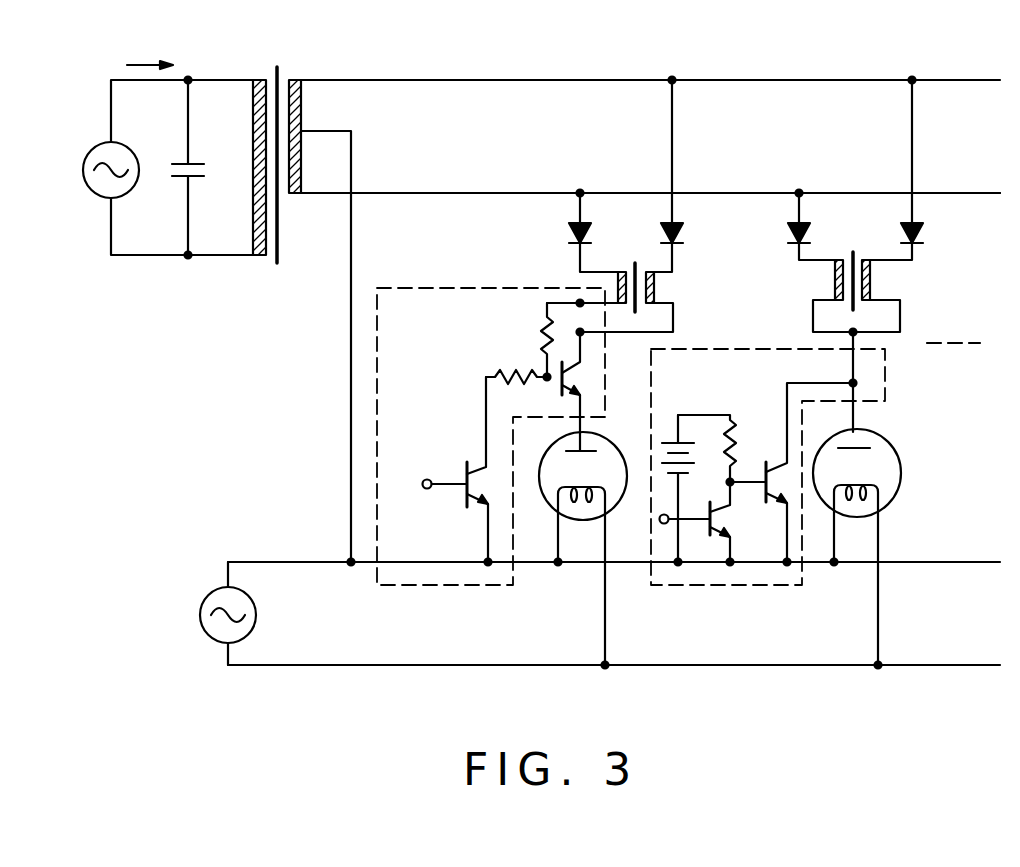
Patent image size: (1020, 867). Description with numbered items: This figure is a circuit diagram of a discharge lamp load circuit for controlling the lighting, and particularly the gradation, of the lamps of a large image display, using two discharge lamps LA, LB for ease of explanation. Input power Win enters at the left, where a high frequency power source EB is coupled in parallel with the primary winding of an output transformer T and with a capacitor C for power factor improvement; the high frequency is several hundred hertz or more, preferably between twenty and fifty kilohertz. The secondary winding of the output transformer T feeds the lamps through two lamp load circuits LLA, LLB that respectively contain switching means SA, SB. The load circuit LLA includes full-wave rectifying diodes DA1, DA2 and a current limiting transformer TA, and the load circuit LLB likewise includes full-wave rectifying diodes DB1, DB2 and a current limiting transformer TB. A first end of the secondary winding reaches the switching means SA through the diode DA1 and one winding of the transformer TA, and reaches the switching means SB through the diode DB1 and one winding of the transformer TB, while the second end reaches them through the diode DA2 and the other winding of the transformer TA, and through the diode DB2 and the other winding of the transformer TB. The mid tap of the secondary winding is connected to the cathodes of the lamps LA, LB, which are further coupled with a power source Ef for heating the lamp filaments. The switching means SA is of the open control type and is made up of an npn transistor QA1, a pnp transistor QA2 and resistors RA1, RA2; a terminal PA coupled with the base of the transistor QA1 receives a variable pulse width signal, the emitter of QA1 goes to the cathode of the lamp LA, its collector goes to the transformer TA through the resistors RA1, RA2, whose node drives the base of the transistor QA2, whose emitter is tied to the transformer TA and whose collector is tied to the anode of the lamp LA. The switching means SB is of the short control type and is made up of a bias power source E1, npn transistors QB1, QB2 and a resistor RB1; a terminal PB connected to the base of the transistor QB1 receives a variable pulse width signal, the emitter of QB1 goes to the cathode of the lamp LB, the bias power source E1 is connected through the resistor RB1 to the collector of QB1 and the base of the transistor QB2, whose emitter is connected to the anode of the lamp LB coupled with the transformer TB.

The input power Win is at (147, 50).
The high frequency power source EB is at (162, 167).
The capacitor C is at (194, 162).
The output transformer T is at (280, 70).
The lamp load circuit LLA is at (442, 236).
The lamp load circuit LLB is at (941, 328).
The switching means SA is at (405, 288).
The switching means SB is at (887, 380).
The full-wave rectifying diode DA1 is at (567, 235).
The full-wave rectifying diode DA2 is at (684, 240).
The full-wave rectifying diode DB1 is at (788, 230).
The full-wave rectifying diode DB2 is at (926, 231).
The current limiting transformer TA is at (647, 263).
The current limiting transformer TB is at (873, 283).
The resistor RA1 is at (542, 337).
The resistor RA2 is at (526, 376).
The resistor RB1 is at (724, 418).
The npn transistor QA1 is at (478, 502).
The pnp transistor QA2 is at (572, 382).
The npn transistor QB1 is at (722, 520).
The npn transistor QB2 is at (778, 464).
The discharge lamp LA is at (622, 462).
The discharge lamp LB is at (897, 447).
The bias power source E1 is at (668, 438).
The terminal PA is at (422, 484).
The terminal PB is at (660, 524).
The power source Ef is at (205, 594).